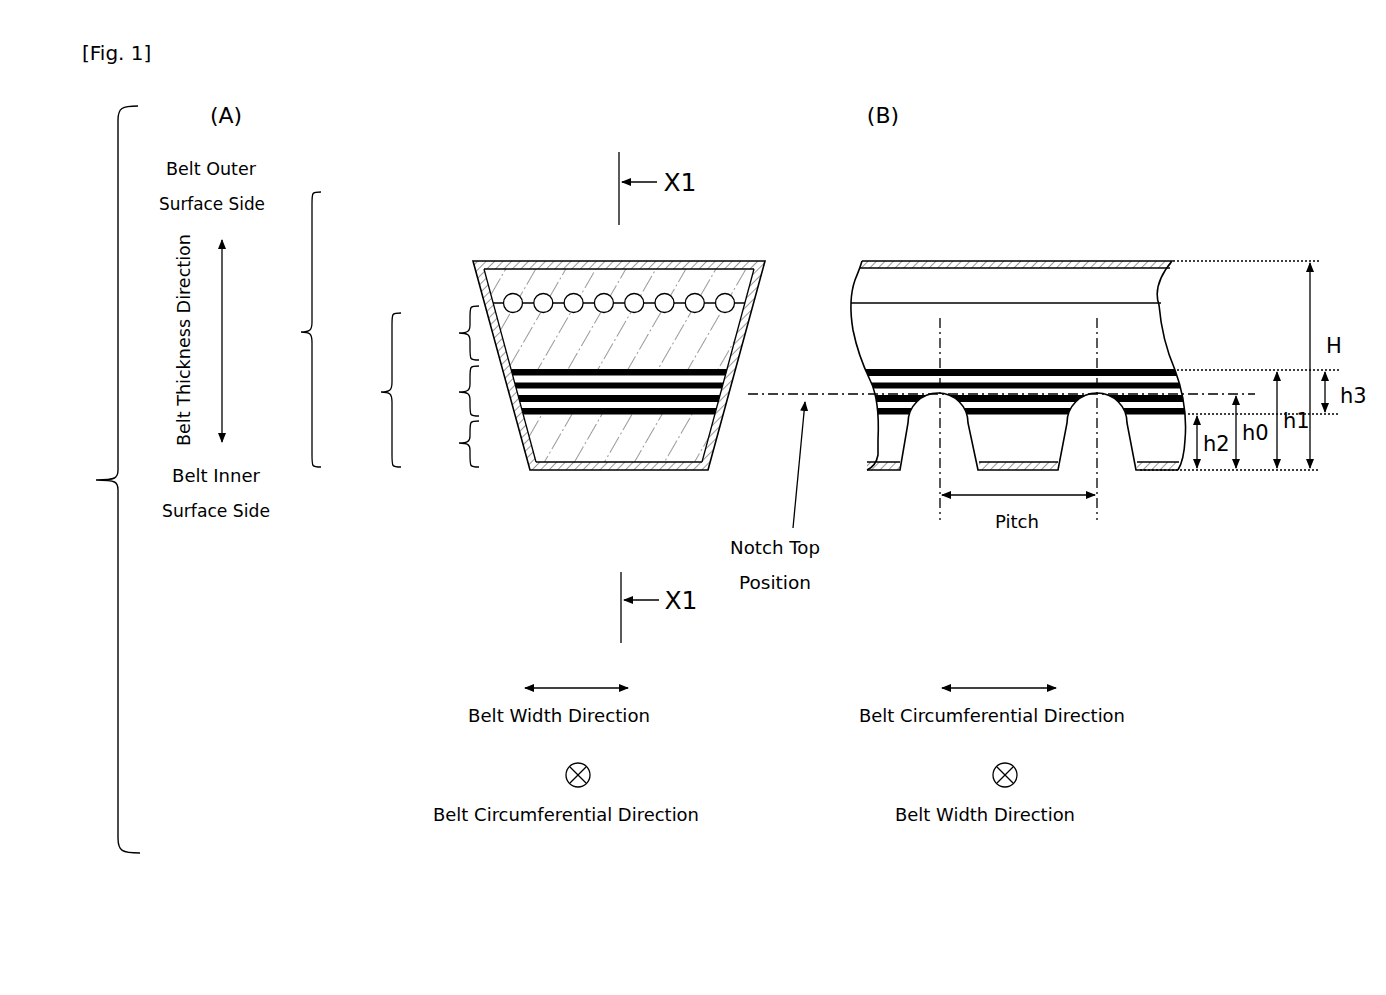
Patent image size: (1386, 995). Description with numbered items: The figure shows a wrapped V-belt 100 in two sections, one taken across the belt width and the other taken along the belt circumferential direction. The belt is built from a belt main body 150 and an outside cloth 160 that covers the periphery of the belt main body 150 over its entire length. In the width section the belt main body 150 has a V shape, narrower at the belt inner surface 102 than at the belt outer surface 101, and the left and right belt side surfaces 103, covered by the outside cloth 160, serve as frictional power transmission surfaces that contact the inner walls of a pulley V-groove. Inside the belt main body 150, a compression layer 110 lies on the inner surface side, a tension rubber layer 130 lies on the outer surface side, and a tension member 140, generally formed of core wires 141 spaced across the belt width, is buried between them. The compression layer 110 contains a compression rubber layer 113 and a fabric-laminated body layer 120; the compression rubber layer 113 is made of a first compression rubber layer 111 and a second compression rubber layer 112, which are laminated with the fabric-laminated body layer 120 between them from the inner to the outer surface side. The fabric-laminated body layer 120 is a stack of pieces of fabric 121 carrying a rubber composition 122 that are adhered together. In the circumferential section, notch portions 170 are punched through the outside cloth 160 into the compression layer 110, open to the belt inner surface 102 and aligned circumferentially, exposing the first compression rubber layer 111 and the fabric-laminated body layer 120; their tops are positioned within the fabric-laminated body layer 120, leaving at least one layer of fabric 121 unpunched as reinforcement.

The wrapped V-belt 100 is at (478, 522).
The belt outer surface 101 is at (658, 262).
The belt inner surface 102 is at (683, 471).
The belt side surfaces 103 is at (755, 300).
The compression layer 110 is at (361, 390).
The first compression rubber layer 111 is at (1225, 488).
The second compression rubber layer 112 is at (1195, 318).
The compression rubber layer 113 is at (712, 433).
The fabric-laminated body layer 120 is at (1248, 342).
The fabric 121 is at (565, 403).
The rubber composition 122 is at (614, 410).
The tension rubber layer 130 is at (525, 292).
The tension member 140 is at (601, 287).
The core wire 141 is at (636, 295).
The belt main body 150 is at (283, 329).
The outside cloth 160 is at (720, 265).
The notch portions 170 is at (938, 449).